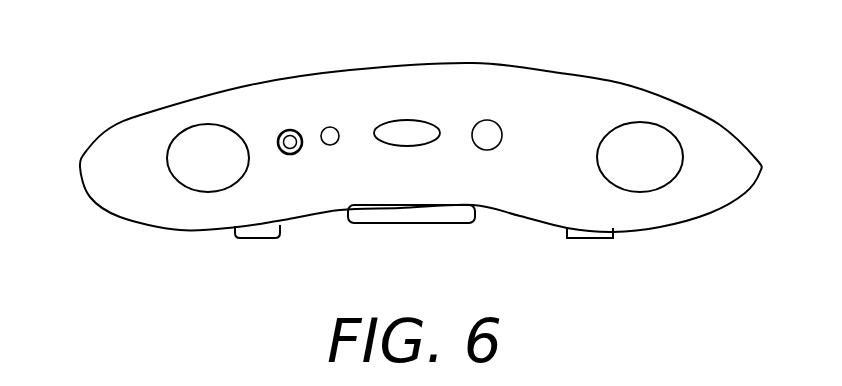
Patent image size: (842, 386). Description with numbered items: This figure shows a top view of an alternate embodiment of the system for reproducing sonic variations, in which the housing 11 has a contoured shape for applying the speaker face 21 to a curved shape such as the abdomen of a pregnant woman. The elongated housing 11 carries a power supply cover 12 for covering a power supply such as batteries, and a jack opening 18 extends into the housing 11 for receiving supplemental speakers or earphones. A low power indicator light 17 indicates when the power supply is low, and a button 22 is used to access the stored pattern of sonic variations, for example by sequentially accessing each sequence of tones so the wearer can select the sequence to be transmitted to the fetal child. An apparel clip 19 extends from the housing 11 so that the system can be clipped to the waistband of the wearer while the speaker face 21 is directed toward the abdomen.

The housing 11 is at (562, 132).
The power supply cover 12 is at (204, 207).
The low power indicator light 17 is at (318, 116).
The jack opening 18 is at (278, 123).
The apparel clip 19 is at (254, 247).
The speaker face 21 is at (404, 157).
The button 22 is at (473, 111).